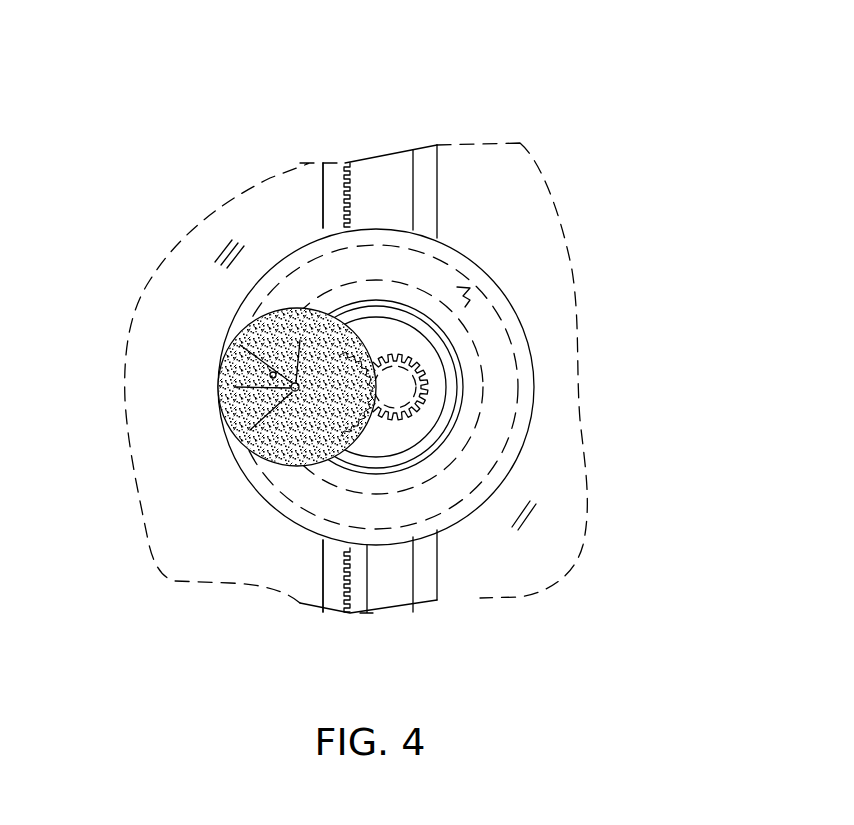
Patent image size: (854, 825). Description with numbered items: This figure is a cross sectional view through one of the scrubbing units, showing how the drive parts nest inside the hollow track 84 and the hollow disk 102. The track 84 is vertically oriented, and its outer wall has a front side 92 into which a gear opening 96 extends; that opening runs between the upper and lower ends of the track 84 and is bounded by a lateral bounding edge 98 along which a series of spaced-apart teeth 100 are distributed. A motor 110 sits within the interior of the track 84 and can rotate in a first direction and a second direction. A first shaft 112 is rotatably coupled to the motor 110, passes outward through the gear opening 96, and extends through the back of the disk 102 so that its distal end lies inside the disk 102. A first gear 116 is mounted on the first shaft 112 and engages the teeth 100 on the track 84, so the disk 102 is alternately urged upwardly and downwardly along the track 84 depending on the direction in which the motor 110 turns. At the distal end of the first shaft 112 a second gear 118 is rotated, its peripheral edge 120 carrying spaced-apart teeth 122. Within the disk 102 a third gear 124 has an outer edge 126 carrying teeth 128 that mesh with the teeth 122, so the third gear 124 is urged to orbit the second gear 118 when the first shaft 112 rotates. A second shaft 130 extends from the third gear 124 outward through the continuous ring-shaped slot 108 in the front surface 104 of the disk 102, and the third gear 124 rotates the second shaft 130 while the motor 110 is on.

The track 84 is at (437, 185).
The front side 92 is at (337, 187).
The gear opening 96 is at (400, 190).
The lateral bounding edge 98 is at (350, 593).
The teeth 100 is at (355, 197).
The disk 102 is at (515, 310).
The front surface 104 is at (476, 295).
The slot 108 is at (432, 400).
The motor 110 is at (425, 423).
The first shaft 112 is at (382, 372).
The first gear 116 is at (400, 333).
The second gear 118 is at (430, 403).
The peripheral edge 120 is at (435, 368).
The teeth 122 is at (432, 386).
The third gear 124 is at (295, 390).
The outer edge 126 is at (292, 365).
The teeth 128 is at (215, 388).
The second shaft 130 is at (308, 468).